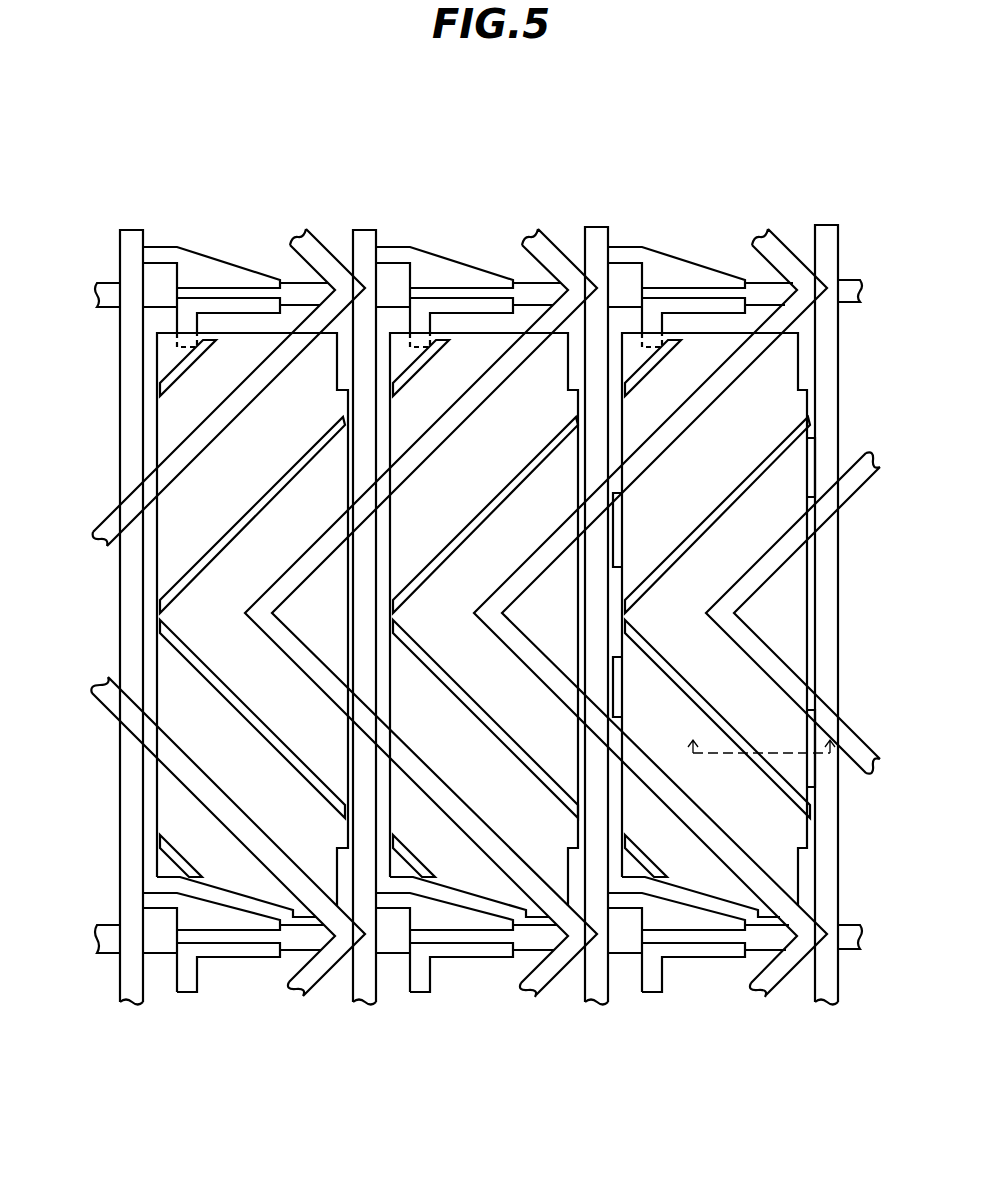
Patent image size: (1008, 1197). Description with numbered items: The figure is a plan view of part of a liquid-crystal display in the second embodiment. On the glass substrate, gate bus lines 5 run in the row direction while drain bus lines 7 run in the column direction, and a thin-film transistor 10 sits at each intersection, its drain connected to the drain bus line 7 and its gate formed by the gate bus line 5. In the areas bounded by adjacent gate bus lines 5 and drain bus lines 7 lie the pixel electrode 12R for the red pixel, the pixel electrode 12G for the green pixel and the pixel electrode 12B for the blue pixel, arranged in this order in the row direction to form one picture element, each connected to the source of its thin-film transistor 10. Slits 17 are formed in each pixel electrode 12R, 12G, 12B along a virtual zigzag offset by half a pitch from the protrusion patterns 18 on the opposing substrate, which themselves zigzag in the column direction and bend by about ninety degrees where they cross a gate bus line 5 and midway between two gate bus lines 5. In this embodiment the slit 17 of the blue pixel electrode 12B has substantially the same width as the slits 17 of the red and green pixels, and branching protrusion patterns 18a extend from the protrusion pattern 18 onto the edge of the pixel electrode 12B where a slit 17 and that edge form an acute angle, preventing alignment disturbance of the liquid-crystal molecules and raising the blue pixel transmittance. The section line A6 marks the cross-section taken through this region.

The gate bus line 5 is at (866, 936).
The drain bus line 7 is at (828, 226).
The thin-film transistor 10 is at (727, 275).
The pixel electrode for a red pixel 12R is at (157, 410).
The pixel electrode for a green pixel 12G is at (470, 895).
The pixel electrode for a blue pixel 12B is at (808, 362).
The slit 17 is at (700, 697).
The protrusion pattern 18 is at (875, 478).
The branching protrusion pattern 18a is at (627, 517).
The section line A6 is at (813, 746).